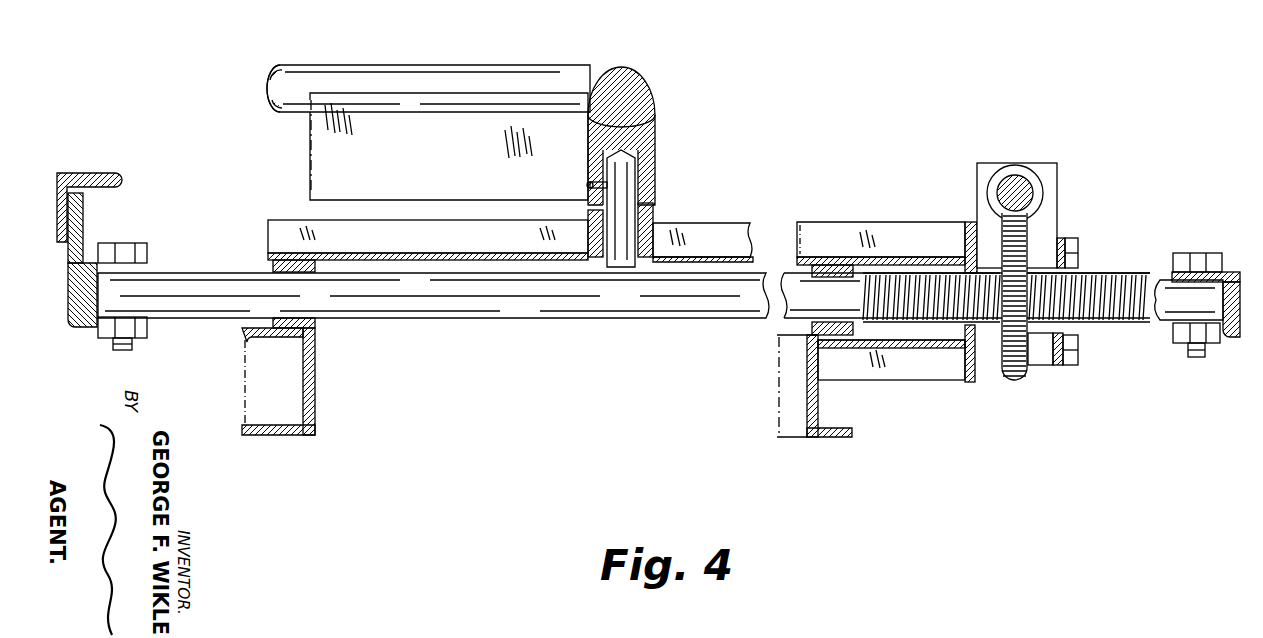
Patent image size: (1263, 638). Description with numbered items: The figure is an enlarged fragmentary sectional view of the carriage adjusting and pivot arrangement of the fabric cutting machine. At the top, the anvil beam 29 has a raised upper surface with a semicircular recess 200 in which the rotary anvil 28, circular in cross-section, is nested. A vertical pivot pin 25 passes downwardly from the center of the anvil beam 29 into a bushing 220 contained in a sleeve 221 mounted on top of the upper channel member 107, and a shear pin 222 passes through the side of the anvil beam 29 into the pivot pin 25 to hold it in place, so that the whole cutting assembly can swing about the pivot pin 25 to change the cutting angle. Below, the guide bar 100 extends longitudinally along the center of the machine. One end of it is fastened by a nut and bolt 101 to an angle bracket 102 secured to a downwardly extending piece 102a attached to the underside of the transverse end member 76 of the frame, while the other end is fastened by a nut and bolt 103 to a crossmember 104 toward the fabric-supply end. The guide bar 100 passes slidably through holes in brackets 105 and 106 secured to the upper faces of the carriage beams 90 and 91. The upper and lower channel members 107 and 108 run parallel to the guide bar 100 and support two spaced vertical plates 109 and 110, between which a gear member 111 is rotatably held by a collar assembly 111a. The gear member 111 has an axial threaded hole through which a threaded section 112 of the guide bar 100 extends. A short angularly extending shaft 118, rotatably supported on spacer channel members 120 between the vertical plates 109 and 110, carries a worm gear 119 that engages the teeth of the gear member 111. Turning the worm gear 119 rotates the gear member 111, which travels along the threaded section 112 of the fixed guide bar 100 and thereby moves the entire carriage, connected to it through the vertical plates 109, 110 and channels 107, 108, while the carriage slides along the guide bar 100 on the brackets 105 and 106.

The pivot pin 25 is at (632, 173).
The rotary anvil 28 is at (487, 77).
The anvil beam 29 is at (449, 146).
The transverse end member 76 is at (97, 175).
The carriage beam 90 is at (303, 437).
The carriage beam 91 is at (825, 438).
The guide bar 100 is at (543, 300).
The nut and bolt 101 is at (128, 347).
The angle bracket 102 is at (92, 262).
The downwardly extending piece 102a is at (85, 220).
The nut and bolt 103 is at (1193, 255).
The crossmember 104 is at (1237, 338).
The bracket 105 is at (317, 323).
The bracket 106 is at (800, 330).
The upper channel member 107 is at (895, 228).
The lower channel member 108 is at (920, 367).
The vertical plate 109 is at (965, 380).
The vertical plate 110 is at (1052, 367).
The gear member 111 is at (1013, 377).
The collar assembly 111a is at (1045, 343).
The threaded section 112 is at (1127, 325).
The shaft 118 is at (1032, 200).
The worm gear 119 is at (1028, 180).
The spacer channel member 120 is at (983, 170).
The semicircular recess 200 is at (655, 112).
The bushing 220 is at (655, 220).
The sleeve 221 is at (655, 240).
The shear pin 222 is at (588, 185).